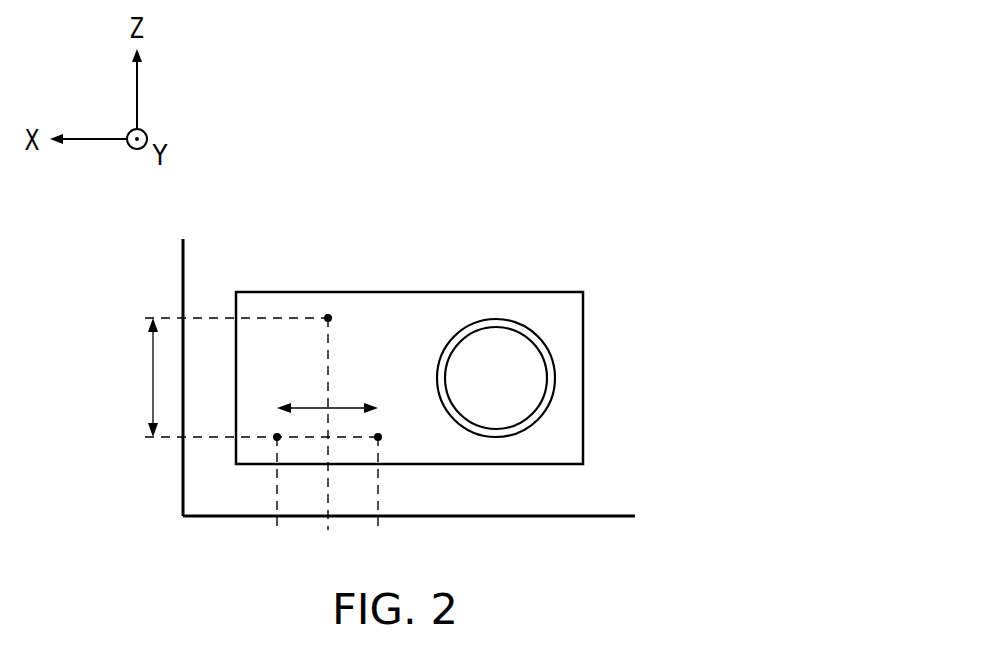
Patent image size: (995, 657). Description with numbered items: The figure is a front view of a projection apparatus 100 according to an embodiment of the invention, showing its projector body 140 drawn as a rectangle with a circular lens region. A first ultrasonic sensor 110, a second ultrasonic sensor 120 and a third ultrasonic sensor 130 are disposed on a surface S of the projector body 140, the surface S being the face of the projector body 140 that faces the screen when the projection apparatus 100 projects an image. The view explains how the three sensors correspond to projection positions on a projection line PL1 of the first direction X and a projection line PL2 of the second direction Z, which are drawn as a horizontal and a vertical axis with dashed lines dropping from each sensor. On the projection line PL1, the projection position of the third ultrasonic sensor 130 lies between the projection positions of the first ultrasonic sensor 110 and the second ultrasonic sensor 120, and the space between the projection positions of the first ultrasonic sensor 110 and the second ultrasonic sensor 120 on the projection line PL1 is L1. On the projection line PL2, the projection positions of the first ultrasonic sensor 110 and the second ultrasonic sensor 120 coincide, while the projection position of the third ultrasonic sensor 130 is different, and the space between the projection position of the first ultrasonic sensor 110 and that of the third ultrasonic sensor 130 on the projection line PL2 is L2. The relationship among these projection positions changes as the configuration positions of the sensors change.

The projection apparatus 100 is at (732, 580).
The first ultrasonic sensor 110 is at (275, 439).
The second ultrasonic sensor 120 is at (380, 439).
The third ultrasonic sensor 130 is at (330, 318).
The projector body 140 is at (583, 355).
The surface S is at (570, 322).
The space L1 is at (327, 391).
The space L2 is at (138, 377).
The projection line PL1 is at (433, 517).
The projection line PL2 is at (186, 359).